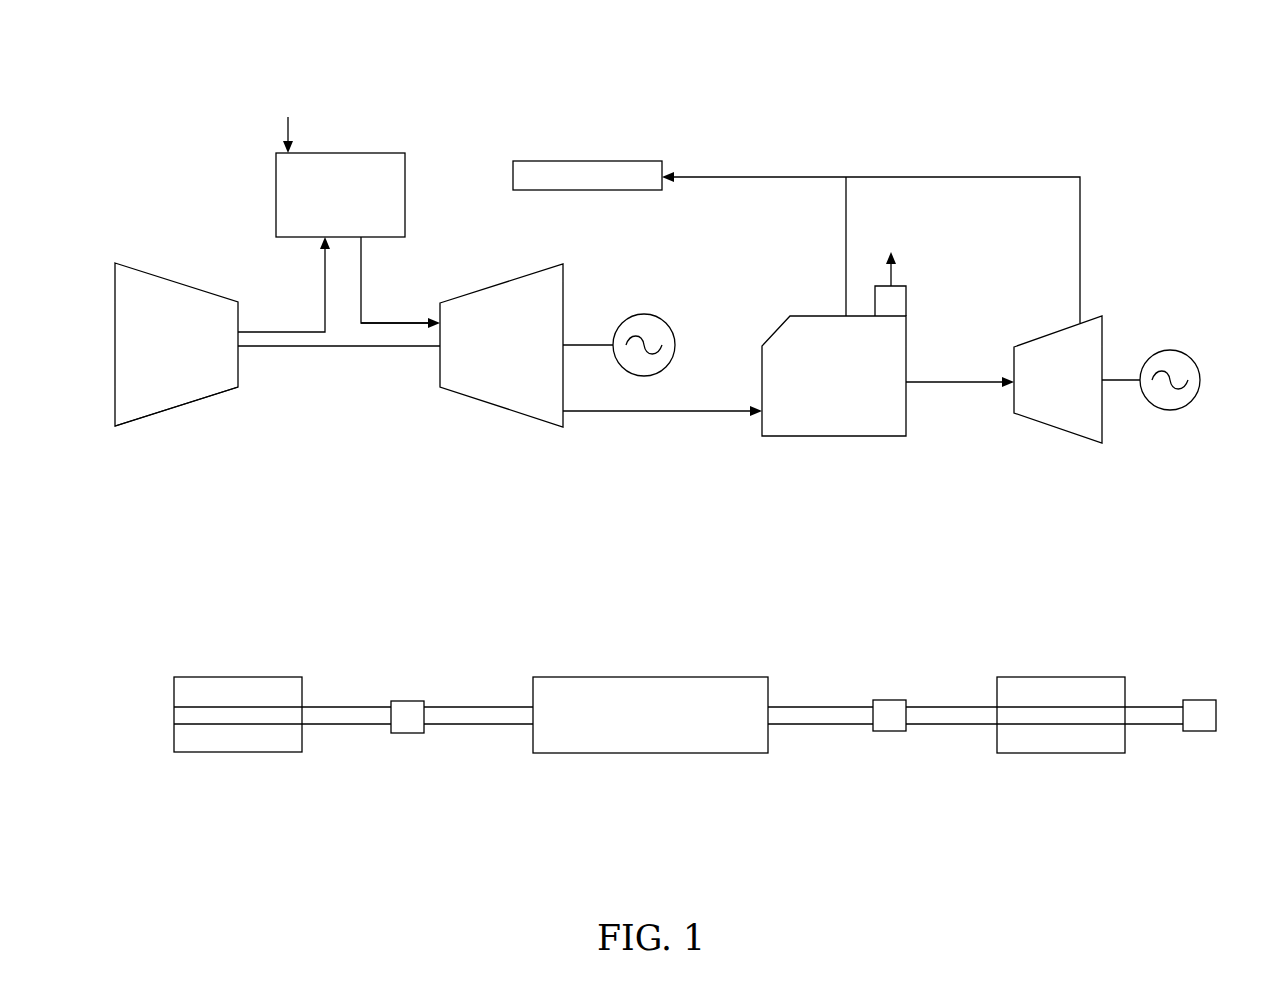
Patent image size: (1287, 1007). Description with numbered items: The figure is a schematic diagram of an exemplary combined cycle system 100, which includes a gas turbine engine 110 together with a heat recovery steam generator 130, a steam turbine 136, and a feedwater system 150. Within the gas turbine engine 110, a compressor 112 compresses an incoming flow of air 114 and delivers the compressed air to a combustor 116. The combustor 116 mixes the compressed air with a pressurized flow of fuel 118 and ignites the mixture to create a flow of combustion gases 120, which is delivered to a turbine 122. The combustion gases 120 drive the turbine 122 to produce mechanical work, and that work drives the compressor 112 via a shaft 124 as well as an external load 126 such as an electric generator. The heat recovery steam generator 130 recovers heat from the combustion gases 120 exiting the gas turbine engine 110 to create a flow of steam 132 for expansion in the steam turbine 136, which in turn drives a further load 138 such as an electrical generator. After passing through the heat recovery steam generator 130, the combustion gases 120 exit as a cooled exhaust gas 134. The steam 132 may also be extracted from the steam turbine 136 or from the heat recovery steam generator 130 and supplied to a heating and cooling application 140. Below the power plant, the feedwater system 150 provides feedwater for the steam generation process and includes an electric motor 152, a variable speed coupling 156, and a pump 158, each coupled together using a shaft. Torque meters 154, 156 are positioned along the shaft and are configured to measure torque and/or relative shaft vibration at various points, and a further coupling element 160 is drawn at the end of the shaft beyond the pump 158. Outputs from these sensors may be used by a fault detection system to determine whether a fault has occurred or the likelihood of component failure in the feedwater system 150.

The combined cycle system 100 is at (166, 48).
The gas turbine engine 110 is at (159, 186).
The compressor 112 is at (195, 358).
The incoming flow of air 114 is at (152, 417).
The combustor 116 is at (358, 206).
The pressurized flow of fuel 118 is at (288, 140).
The flow of combustion gases 120 is at (377, 321).
The turbine 122 is at (519, 356).
The shaft 124 is at (573, 343).
The external load 126 is at (672, 357).
The heat recovery steam generator 130 is at (852, 393).
The flow of steam 132 is at (787, 175).
The cooled exhaust gas 134 is at (892, 272).
The steam turbine 136 is at (1076, 391).
The further load 138 is at (1173, 416).
The heating and cooling application 140 is at (587, 161).
The feedwater system 150 is at (144, 614).
The electric motor 152 is at (240, 677).
The torque meter 154 is at (408, 701).
The variable speed coupling 156 is at (650, 677).
The pump 158 is at (1060, 677).
The coupling 160 is at (1200, 700).